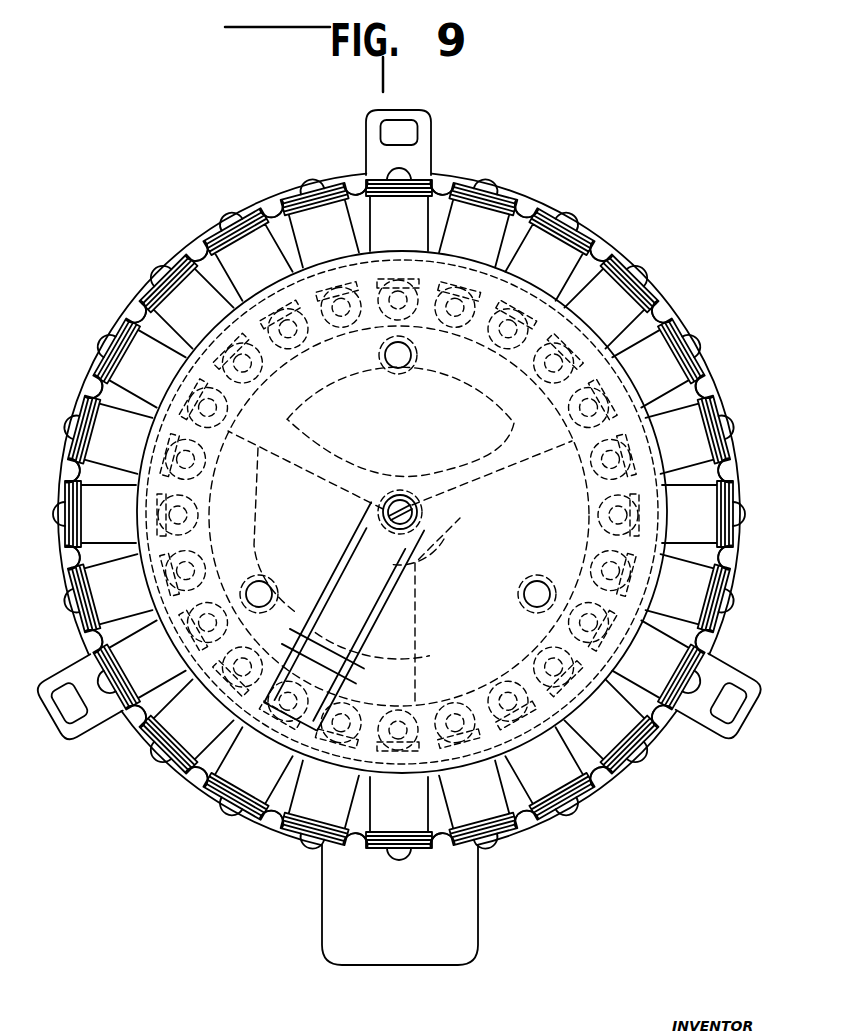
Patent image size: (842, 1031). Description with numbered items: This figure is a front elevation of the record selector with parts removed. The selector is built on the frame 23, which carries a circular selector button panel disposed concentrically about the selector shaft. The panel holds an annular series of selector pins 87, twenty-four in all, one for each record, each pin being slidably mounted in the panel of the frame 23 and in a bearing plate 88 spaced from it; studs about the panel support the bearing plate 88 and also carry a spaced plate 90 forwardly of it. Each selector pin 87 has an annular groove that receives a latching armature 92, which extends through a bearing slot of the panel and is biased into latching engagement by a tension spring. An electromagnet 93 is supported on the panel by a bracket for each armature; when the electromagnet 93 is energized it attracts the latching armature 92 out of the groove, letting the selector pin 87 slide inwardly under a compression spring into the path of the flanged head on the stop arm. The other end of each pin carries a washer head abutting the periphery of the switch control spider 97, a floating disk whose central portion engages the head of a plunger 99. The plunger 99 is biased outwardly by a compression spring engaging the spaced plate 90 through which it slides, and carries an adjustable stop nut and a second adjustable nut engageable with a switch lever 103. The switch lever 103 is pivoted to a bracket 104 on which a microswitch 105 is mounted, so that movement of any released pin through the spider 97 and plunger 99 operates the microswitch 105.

The frame 23 is at (420, 157).
The electromagnet 93 is at (490, 232).
The selector pin 87 is at (413, 355).
The latching armature 92 is at (455, 340).
The bearing plate 88 is at (340, 382).
The spaced plate 90 is at (400, 447).
The switch control spider 97 is at (282, 531).
The plunger 99 is at (414, 503).
The switch lever 103 is at (353, 580).
The bracket 104 is at (377, 636).
The microswitch 105 is at (323, 693).